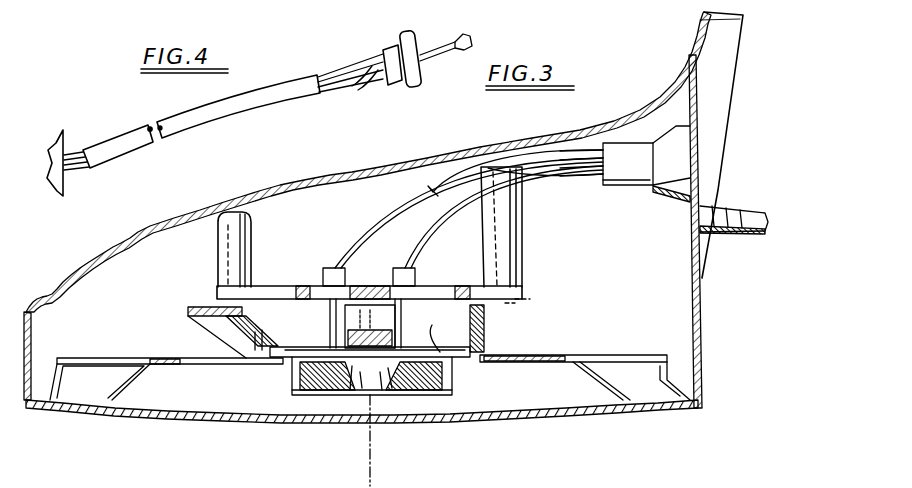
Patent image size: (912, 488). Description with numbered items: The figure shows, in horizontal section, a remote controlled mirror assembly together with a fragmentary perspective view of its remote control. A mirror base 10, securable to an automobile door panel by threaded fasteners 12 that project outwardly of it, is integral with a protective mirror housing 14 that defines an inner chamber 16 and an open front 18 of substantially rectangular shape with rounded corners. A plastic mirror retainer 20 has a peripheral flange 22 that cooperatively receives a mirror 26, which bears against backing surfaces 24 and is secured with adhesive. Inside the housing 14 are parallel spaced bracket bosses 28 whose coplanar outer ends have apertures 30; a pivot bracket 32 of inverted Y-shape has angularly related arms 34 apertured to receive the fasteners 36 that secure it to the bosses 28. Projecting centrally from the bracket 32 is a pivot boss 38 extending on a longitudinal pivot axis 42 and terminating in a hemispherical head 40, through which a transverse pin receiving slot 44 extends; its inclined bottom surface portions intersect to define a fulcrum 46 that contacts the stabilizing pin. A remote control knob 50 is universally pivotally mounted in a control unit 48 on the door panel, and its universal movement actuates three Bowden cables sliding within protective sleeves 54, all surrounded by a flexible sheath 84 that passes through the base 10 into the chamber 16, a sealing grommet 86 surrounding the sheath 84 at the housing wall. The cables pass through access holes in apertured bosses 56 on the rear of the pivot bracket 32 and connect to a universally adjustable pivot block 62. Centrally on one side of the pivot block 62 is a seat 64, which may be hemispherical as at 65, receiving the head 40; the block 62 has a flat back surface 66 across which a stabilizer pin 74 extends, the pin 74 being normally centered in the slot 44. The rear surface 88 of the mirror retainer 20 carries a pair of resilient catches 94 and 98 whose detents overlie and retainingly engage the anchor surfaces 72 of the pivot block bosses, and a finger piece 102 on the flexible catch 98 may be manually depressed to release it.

In FIG. 4, the mirror base 10 is at (58, 158).
In FIG. 3, the mirror base 10 is at (718, 123).
In FIG. 3, the threaded fasteners 12 is at (740, 212).
In FIG. 3, the protective mirror housing 14 is at (574, 126).
In FIG. 3, the chamber 16 is at (682, 322).
In FIG. 3, the open front 18 is at (700, 404).
In FIG. 3, the mirror retainer 20 is at (138, 382).
In FIG. 3, the peripheral flange 22 is at (40, 410).
In FIG. 3, the backing surfaces 24 is at (80, 410).
In FIG. 3, the mirror 26 is at (212, 424).
In FIG. 3, the bracket bosses 28 is at (220, 252).
In FIG. 3, the apertures 30 is at (487, 258).
In FIG. 3, the pivot bracket 32 is at (274, 277).
In FIG. 3, the arms 34 is at (300, 286).
In FIG. 3, the fasteners 36 is at (520, 306).
In FIG. 3, the pivot boss 38 is at (345, 320).
In FIG. 3, the hemispherical head 40 is at (360, 396).
In FIG. 3, the longitudinal pivot axis 42 is at (384, 396).
In FIG. 3, the transverse pin receiving slot 44 is at (394, 396).
In FIG. 3, the fulcrum 46 is at (402, 320).
In FIG. 4, the control unit 48 is at (410, 34).
In FIG. 4, the remote control knob 50 is at (472, 34).
In FIG. 4, the protective sleeves 54 is at (350, 90).
In FIG. 3, the protective sleeves 54 is at (582, 178).
In FIG. 3, the bosses 56 is at (331, 268).
In FIG. 3, the pivot block 62 is at (444, 384).
In FIG. 3, the seat 64 is at (350, 396).
In FIG. 3, the hemispherical seat surface 65 is at (374, 396).
In FIG. 3, the flat back surface 66 is at (450, 333).
In FIG. 3, the anchor surfaces 72 is at (289, 346).
In FIG. 3, the stabilizer pin 74 is at (474, 353).
In FIG. 4, the flexible sheath 84 is at (197, 112).
In FIG. 3, the flexible sheath 84 is at (626, 186).
In FIG. 3, the sealing grommet 86 is at (668, 202).
In FIG. 3, the rear surface 88 is at (562, 356).
In FIG. 3, the resilient catch 94 is at (486, 324).
In FIG. 3, the flexible catch 98 is at (242, 346).
In FIG. 3, the finger piece 102 is at (194, 308).